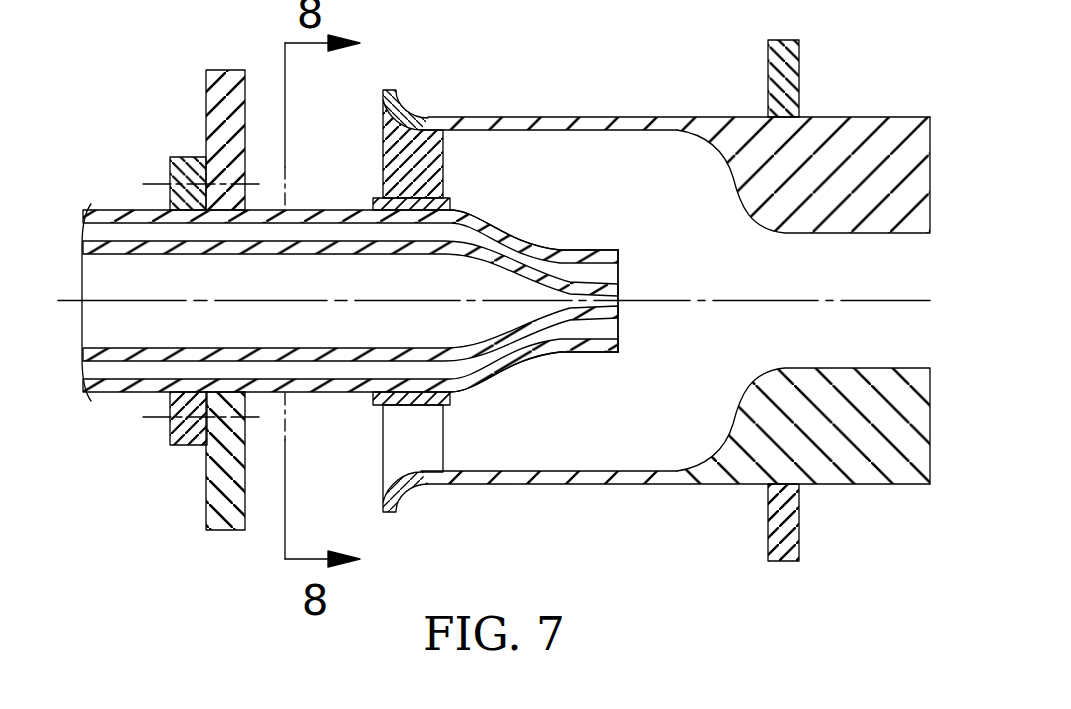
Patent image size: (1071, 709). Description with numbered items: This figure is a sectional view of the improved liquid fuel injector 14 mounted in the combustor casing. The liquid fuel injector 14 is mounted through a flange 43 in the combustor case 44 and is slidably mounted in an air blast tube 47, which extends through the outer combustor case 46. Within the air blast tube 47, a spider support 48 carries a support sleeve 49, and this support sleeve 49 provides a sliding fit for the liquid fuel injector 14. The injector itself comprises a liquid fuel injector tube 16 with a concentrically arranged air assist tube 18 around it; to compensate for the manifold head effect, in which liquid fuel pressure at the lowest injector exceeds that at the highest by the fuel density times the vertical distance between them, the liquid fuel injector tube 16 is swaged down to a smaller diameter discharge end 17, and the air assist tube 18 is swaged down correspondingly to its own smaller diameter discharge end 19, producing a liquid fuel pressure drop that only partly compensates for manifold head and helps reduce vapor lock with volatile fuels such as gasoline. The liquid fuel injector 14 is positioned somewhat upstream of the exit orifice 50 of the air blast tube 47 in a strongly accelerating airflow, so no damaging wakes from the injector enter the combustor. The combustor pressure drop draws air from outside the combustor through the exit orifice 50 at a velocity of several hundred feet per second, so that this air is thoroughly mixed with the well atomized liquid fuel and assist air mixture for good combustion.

The liquid fuel injector 14 is at (124, 187).
The liquid fuel injector tube 16 is at (323, 361).
The smaller diameter discharge end 17 is at (614, 278).
The air assist tube 18 is at (302, 393).
The smaller diameter discharge end 19 is at (552, 237).
The flange 43 is at (170, 437).
The combustor case 44 is at (206, 477).
The outer combustor case 46 is at (800, 532).
The air blast tube 47 is at (588, 486).
The spider support 48 is at (444, 165).
The support sleeve 49 is at (382, 197).
The exit orifice 50 is at (845, 234).